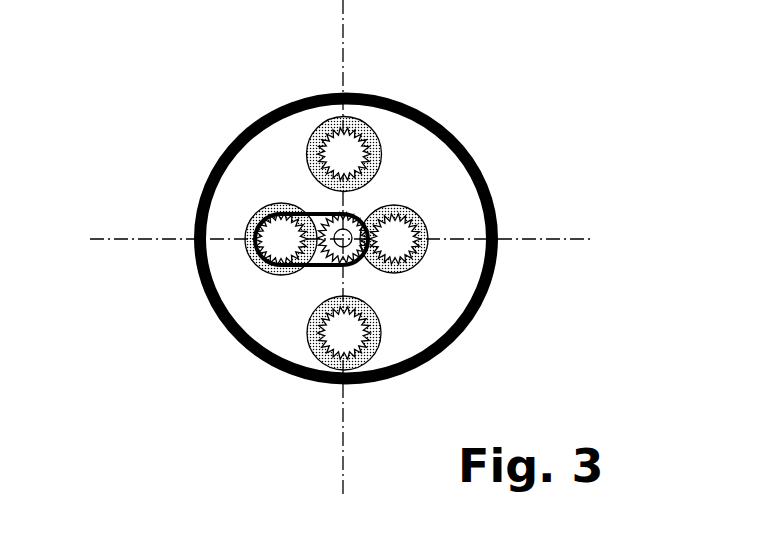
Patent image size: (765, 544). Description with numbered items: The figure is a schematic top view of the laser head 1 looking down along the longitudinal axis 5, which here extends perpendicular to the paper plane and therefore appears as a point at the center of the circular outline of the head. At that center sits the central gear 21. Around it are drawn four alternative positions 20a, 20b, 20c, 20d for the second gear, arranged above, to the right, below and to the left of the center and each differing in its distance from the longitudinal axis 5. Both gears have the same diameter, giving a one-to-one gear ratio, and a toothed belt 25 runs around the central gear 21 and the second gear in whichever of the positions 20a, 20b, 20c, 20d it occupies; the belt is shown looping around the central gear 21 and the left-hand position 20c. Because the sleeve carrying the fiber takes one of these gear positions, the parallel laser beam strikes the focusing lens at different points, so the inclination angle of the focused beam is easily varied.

The laser head 1 is at (210, 170).
The longitudinal axis 5 is at (343, 238).
The gear position 20a is at (423, 220).
The gear position 20b is at (372, 118).
The gear position 20c is at (248, 240).
The gear position 20d is at (375, 348).
The central gear 21 is at (328, 213).
The toothed belt 25 is at (315, 263).